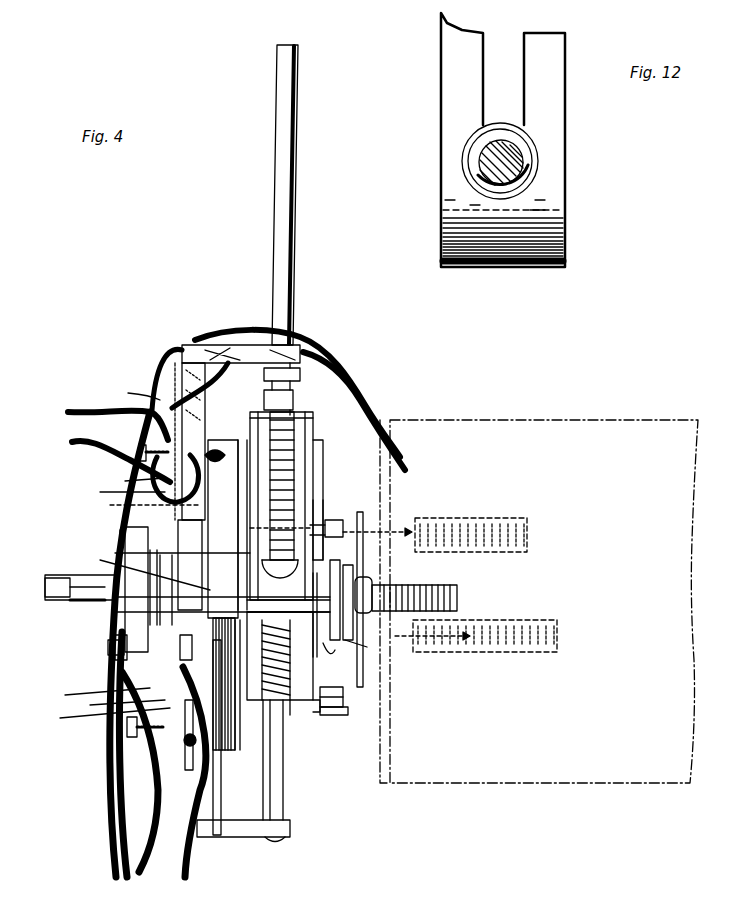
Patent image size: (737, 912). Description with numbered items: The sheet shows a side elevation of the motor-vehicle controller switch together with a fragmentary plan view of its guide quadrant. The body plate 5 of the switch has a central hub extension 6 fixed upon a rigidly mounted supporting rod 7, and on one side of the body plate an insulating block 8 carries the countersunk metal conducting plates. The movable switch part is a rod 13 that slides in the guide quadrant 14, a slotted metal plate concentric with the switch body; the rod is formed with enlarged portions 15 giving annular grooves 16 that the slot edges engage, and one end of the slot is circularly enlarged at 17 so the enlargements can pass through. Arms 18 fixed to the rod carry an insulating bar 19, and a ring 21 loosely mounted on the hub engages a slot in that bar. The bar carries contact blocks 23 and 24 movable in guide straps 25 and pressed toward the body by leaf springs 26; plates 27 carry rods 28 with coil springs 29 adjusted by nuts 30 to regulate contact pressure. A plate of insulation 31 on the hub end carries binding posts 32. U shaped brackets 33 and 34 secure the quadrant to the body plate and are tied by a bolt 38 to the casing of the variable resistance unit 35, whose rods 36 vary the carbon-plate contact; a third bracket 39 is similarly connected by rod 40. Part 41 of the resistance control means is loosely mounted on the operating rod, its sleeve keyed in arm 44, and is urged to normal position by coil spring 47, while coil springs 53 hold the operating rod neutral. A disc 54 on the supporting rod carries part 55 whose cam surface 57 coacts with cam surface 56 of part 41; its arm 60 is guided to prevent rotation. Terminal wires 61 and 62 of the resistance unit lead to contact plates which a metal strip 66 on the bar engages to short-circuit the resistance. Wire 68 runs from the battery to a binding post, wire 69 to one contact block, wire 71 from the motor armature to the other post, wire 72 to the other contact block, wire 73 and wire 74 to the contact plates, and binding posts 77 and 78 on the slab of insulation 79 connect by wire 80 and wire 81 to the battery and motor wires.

In FIG. 4, the body plate 5 is at (300, 500).
In FIG. 4, the hub extension 6 is at (100, 560).
In FIG. 4, the supporting rod 7 is at (90, 605).
In FIG. 4, the insulating block 8 is at (235, 740).
In FIG. 4, the rod 13 is at (275, 198).
In FIG. 12, the rod 13 is at (480, 178).
In FIG. 4, the guide quadrant 14 is at (313, 445).
In FIG. 12, the guide quadrant 14 is at (555, 135).
In FIG. 4, the enlarged portions 15 is at (298, 378).
In FIG. 12, the enlarged portions 15 is at (531, 175).
In FIG. 4, the annular grooves 16 is at (296, 395).
In FIG. 12, the annular grooves 16 is at (535, 162).
In FIG. 4, the circular enlargement 17 is at (125, 540).
In FIG. 12, the circular enlargement 17 is at (465, 185).
In FIG. 4, the arms 18 is at (226, 345).
In FIG. 4, the insulating bar 19 is at (190, 363).
In FIG. 4, the ring 21 is at (115, 645).
In FIG. 4, the contact block 23 is at (130, 505).
In FIG. 4, the contact block 24 is at (111, 706).
In FIG. 4, the guide straps 25 is at (214, 470).
In FIG. 4, the leaf springs 26 is at (135, 394).
In FIG. 4, the plates 27 is at (212, 445).
In FIG. 4, the rod 28 is at (140, 452).
In FIG. 4, the coil springs 29 is at (125, 481).
In FIG. 4, the nuts 30 is at (145, 448).
In FIG. 4, the plate of insulation 31 is at (125, 530).
In FIG. 4, the binding posts 32 is at (70, 600).
In FIG. 4, the U shaped bracket 33 is at (290, 660).
In FIG. 4, the U shaped bracket 34 is at (250, 528).
In FIG. 4, the variable resistance unit 35 is at (568, 436).
In FIG. 4, the rods 36 is at (488, 518).
In FIG. 4, the bolt 38 is at (338, 520).
In FIG. 4, the U shaped bracket 39 is at (320, 712).
In FIG. 4, the rod 40 is at (340, 715).
In FIG. 4, the part of resistance control means 41 is at (335, 650).
In FIG. 4, the arm 44 is at (288, 720).
In FIG. 4, the coil spring 47 is at (50, 555).
In FIG. 4, the coil springs 53 is at (360, 512).
In FIG. 4, the disc 54 is at (355, 570).
In FIG. 4, the part 55 is at (367, 647).
In FIG. 4, the cam surface 56 is at (355, 535).
In FIG. 4, the cam surface 57 is at (365, 560).
In FIG. 4, the arm 60 is at (372, 590).
In FIG. 4, the terminal wire 61 is at (312, 345).
In FIG. 4, the terminal wire 62 is at (335, 358).
In FIG. 4, the metal strip 66 is at (160, 368).
In FIG. 4, the wire 68 is at (120, 820).
In FIG. 4, the wire 69 is at (100, 492).
In FIG. 4, the wire 71 is at (106, 850).
In FIG. 4, the wire 72 is at (91, 695).
In FIG. 4, the wire 73 is at (72, 440).
In FIG. 4, the wire 74 is at (78, 410).
In FIG. 4, the binding post 77 is at (180, 645).
In FIG. 4, the binding post 78 is at (238, 750).
In FIG. 4, the slab of insulation 79 is at (270, 740).
In FIG. 4, the wire 80 is at (198, 808).
In FIG. 4, the wire 81 is at (145, 855).